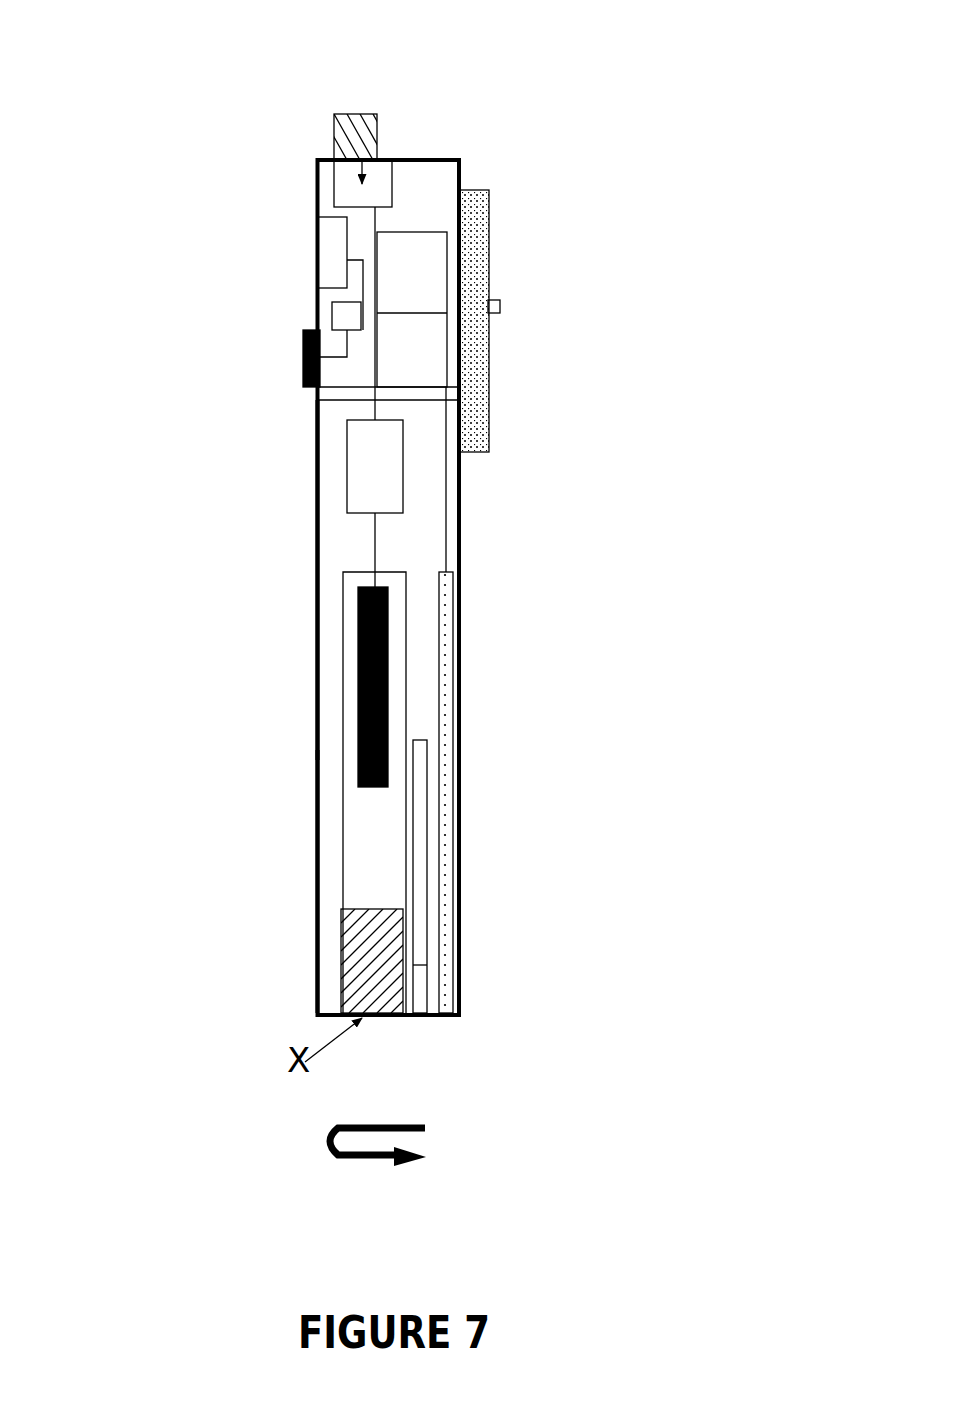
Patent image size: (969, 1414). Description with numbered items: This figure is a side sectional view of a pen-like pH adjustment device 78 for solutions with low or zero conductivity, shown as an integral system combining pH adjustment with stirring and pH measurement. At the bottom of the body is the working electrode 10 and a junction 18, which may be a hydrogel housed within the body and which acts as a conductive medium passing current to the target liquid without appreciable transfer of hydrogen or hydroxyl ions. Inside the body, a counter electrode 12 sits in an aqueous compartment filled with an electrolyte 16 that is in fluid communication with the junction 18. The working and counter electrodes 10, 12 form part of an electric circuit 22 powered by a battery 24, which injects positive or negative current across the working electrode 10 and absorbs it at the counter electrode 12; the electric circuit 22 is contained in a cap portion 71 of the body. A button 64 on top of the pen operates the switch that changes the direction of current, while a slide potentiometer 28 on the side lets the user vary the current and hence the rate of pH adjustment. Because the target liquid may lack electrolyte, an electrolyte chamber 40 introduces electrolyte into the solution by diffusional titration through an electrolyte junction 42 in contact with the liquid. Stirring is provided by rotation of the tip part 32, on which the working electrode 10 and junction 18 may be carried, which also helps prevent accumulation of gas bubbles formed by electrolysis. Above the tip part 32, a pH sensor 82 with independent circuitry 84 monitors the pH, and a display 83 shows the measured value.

The working electrode 10 is at (445, 982).
The counter electrode 12 is at (389, 618).
The electrolyte 16 is at (407, 817).
The junction 18 is at (405, 920).
The electric circuit 22 is at (418, 268).
The battery 24 is at (355, 467).
The slide potentiometer 28 is at (494, 305).
The tip part 32 is at (313, 627).
The electrolyte chamber 40 is at (414, 864).
The electrolyte junction 42 is at (416, 992).
The button 64 is at (328, 112).
The cap portion 71 is at (463, 175).
The pH adjustment device 78 is at (258, 738).
The sensor 82 is at (302, 352).
The display 83 is at (313, 242).
The independent circuitry 84 is at (331, 316).